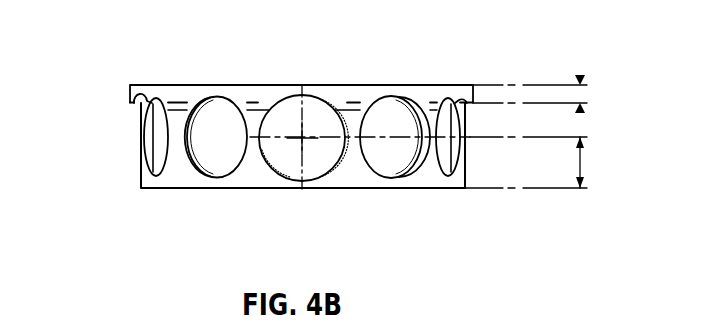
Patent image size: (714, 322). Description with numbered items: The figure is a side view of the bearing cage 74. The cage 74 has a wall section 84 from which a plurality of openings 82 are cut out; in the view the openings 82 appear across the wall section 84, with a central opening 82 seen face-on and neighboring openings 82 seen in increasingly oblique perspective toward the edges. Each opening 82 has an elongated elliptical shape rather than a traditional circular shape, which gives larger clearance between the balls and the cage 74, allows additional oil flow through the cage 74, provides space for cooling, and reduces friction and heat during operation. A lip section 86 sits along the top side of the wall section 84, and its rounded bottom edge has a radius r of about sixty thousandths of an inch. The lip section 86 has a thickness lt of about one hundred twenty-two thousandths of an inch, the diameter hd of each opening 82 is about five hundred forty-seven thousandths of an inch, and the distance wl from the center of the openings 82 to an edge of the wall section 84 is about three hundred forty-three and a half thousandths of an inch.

The cage 74 is at (488, 45).
The lip section 86 is at (130, 88).
The radius of the rounded bottom edge of the lip section r is at (134, 110).
The wall section 84 is at (170, 177).
The openings 82 is at (318, 178).
The diameter of the openings hd is at (315, 92).
The thickness of the lip section lt is at (544, 94).
The distance from the center of the openings to an edge of the wall section wl is at (438, 162).